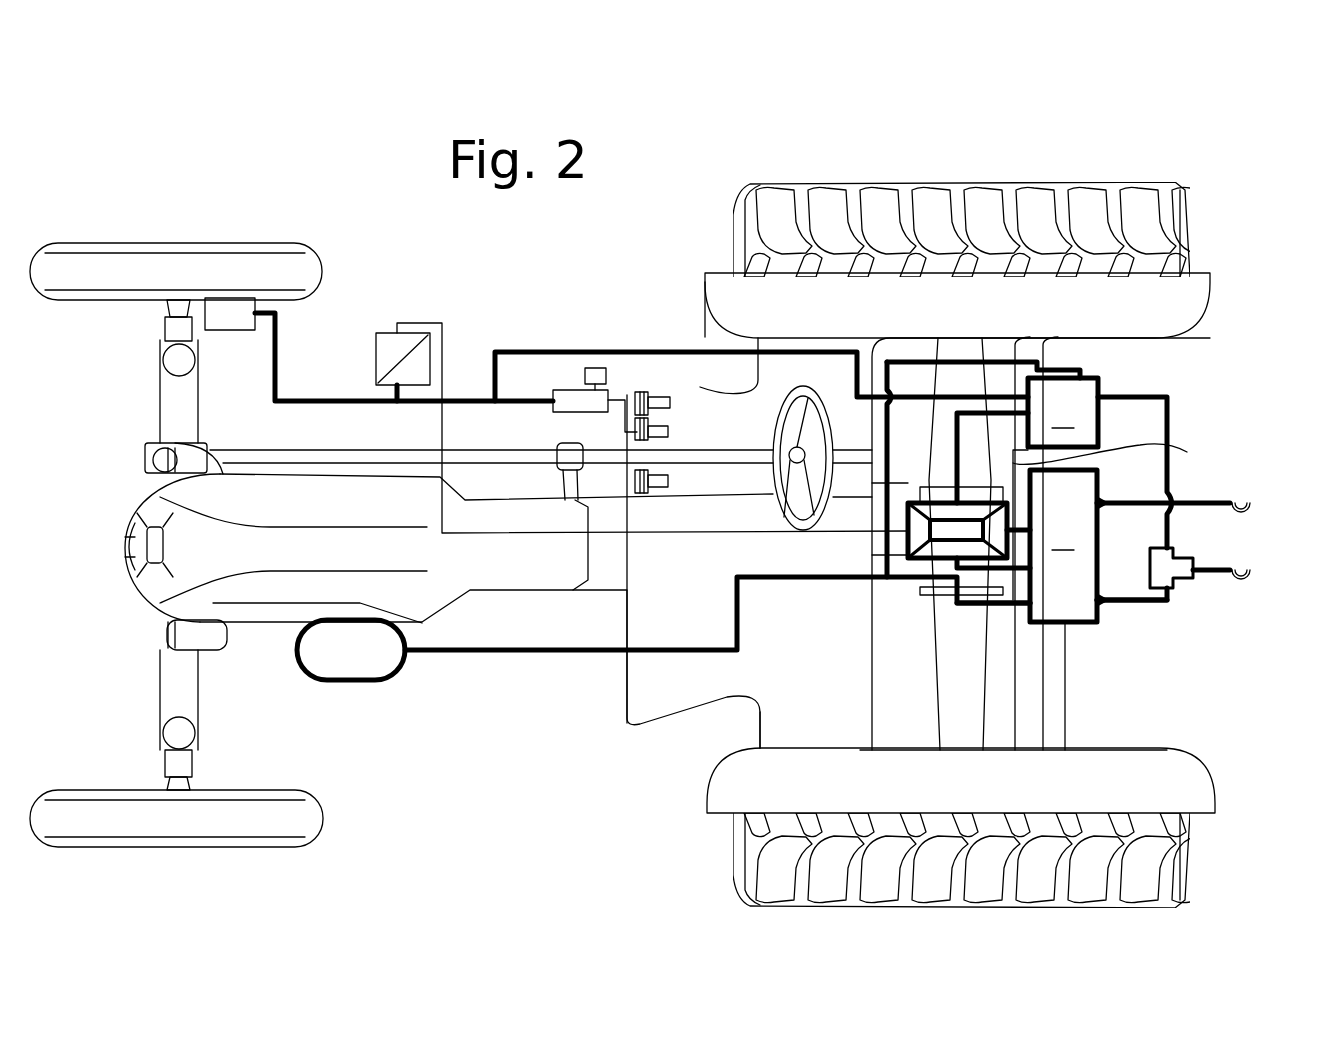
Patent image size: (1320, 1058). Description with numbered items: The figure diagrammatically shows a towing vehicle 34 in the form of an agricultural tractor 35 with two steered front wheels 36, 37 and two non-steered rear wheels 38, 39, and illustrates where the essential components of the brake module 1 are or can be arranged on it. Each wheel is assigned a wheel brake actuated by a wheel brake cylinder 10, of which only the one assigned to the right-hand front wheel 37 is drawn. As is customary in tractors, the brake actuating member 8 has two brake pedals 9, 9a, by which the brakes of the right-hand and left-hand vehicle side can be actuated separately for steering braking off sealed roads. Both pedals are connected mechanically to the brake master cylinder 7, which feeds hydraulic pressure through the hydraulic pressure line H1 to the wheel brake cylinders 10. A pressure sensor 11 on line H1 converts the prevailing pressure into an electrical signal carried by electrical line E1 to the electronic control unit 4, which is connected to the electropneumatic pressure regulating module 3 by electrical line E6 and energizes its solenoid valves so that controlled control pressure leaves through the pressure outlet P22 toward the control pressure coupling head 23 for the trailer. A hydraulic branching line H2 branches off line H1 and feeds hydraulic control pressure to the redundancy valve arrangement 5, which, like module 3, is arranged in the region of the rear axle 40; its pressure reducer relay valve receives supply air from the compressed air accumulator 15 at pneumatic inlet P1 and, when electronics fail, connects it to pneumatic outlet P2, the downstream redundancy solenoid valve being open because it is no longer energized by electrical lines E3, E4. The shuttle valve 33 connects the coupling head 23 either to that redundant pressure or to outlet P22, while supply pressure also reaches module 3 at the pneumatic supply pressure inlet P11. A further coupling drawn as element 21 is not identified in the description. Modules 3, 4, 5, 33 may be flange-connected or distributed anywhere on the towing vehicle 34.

The brake module 1 is at (1143, 368).
The electropneumatic pressure regulating module 3 is at (1069, 546).
The electronic control unit 4 is at (930, 555).
The redundancy valve arrangement 5 is at (1027, 440).
The brake master cylinder 7 is at (571, 398).
The brake actuating member 8 is at (681, 476).
The brake pedal 9 is at (654, 476).
The brake pedal 9a is at (655, 425).
The wheel brake cylinder 10 is at (235, 320).
The pressure sensor 11 is at (393, 333).
The compressed air accumulator 15 is at (341, 668).
The brake coupling (trailer line) 21 is at (1255, 510).
The control pressure coupling head 23 is at (1255, 577).
The shuttle valve 33 is at (1172, 583).
The towing vehicle 34 is at (603, 752).
The agricultural tractor 35 is at (510, 722).
The front wheel 36 is at (292, 830).
The front wheel 37 is at (240, 262).
The rear wheel 38 is at (745, 870).
The rear wheel 39 is at (760, 208).
The rear axle 40 is at (967, 711).
The hydraulic pressure line H1 is at (460, 398).
The hydraulic branching line H2 is at (547, 350).
The electrical line E1 is at (690, 533).
The electrical line E3 is at (1143, 455).
The electrical line E4 is at (1143, 455).
The electrical line E6 is at (1025, 607).
The pneumatic inlet P1 is at (1077, 377).
The pneumatic outlet P2 is at (1100, 392).
The pneumatic supply pressure inlet P11 is at (1035, 622).
The pressure outlet P22 is at (1100, 607).